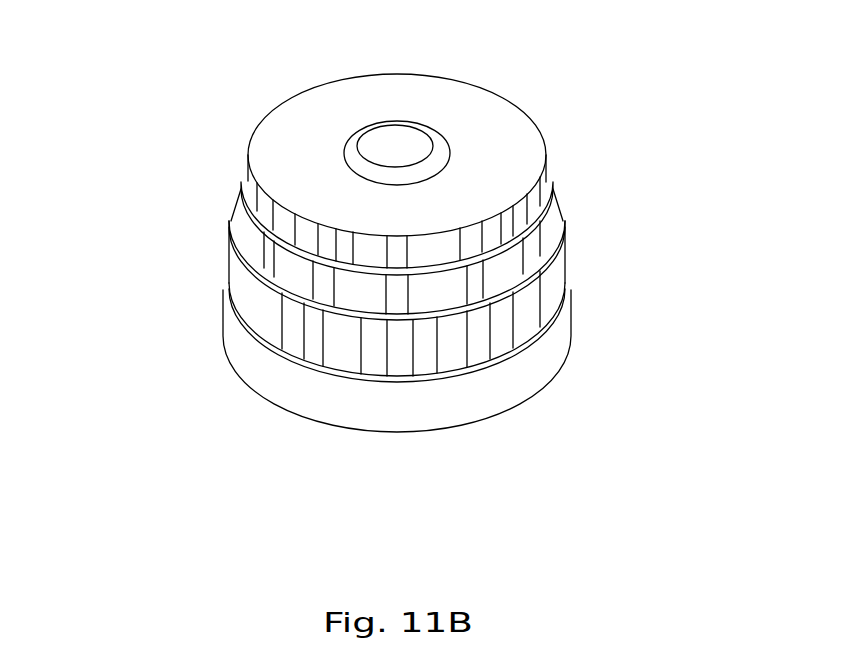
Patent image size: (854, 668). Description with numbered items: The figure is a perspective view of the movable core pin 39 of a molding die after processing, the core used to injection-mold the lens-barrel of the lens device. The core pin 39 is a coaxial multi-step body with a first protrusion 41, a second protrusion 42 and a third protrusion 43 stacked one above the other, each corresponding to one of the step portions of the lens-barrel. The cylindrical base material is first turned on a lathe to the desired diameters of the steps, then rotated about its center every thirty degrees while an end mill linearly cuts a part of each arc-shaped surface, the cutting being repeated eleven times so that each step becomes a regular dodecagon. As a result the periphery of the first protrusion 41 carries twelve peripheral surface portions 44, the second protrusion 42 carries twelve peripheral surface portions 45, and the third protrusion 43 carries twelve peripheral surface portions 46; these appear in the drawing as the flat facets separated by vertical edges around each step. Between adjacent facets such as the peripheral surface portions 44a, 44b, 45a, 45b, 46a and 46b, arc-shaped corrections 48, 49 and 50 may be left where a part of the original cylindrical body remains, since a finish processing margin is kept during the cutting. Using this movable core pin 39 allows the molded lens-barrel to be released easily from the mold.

The movable core pin 39 is at (523, 120).
The peripheral surface portions 44 is at (530, 152).
The peripheral surface portion 44a is at (355, 250).
The peripheral surface portion 44b is at (293, 227).
The arc-shaped correction 48 is at (330, 225).
The first protrusion 41 is at (537, 188).
The second protrusion 42 is at (543, 227).
The third protrusion 43 is at (553, 280).
The peripheral surface portions 45 is at (520, 352).
The peripheral surface portion 45a is at (350, 376).
The peripheral surface portion 45b is at (284, 268).
The peripheral surface portions 46 is at (433, 360).
The peripheral surface portion 46a is at (343, 358).
The peripheral surface portion 46b is at (277, 323).
The arc-shaped correction 49 is at (258, 265).
The arc-shaped correction 50 is at (295, 383).